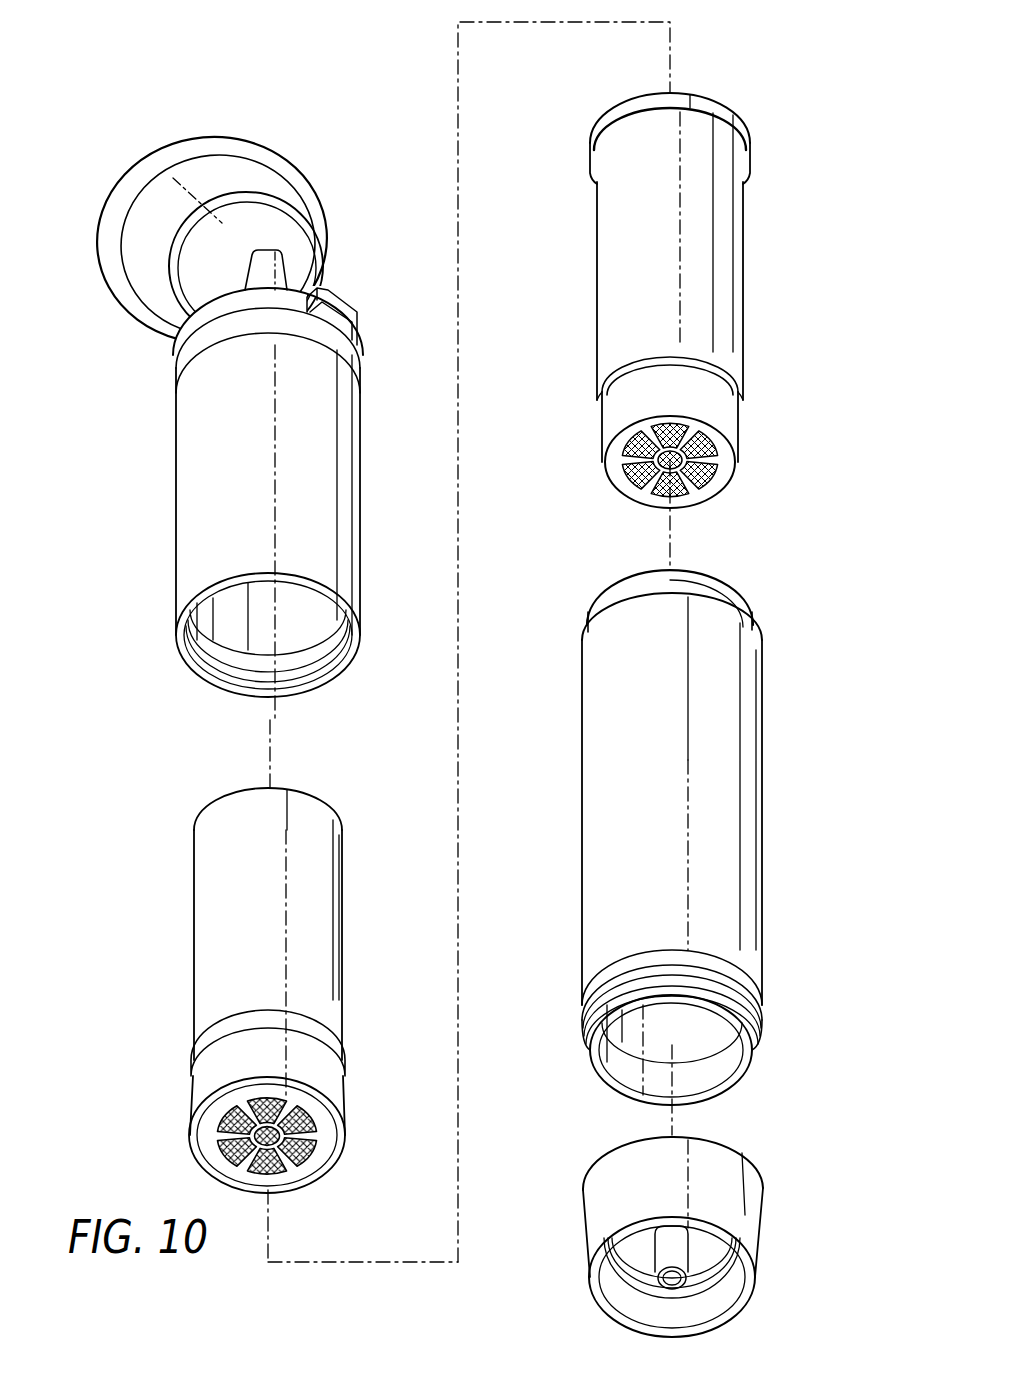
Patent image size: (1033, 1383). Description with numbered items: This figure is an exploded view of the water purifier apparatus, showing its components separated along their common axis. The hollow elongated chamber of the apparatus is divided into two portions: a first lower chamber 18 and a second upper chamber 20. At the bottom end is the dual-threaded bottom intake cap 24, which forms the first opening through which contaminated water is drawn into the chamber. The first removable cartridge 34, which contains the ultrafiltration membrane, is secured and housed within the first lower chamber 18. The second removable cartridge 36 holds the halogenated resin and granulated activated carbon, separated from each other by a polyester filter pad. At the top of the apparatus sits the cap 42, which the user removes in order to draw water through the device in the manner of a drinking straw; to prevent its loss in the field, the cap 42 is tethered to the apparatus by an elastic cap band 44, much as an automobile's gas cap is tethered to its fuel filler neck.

The first lower chamber 18 is at (727, 821).
The second upper chamber 20 is at (217, 528).
The bottom intake cap 24 is at (745, 1213).
The first removable cartridge 34 is at (697, 246).
The second removable cartridge 36 is at (218, 962).
The cap 42 is at (287, 178).
The elastic cap band 44 is at (176, 366).